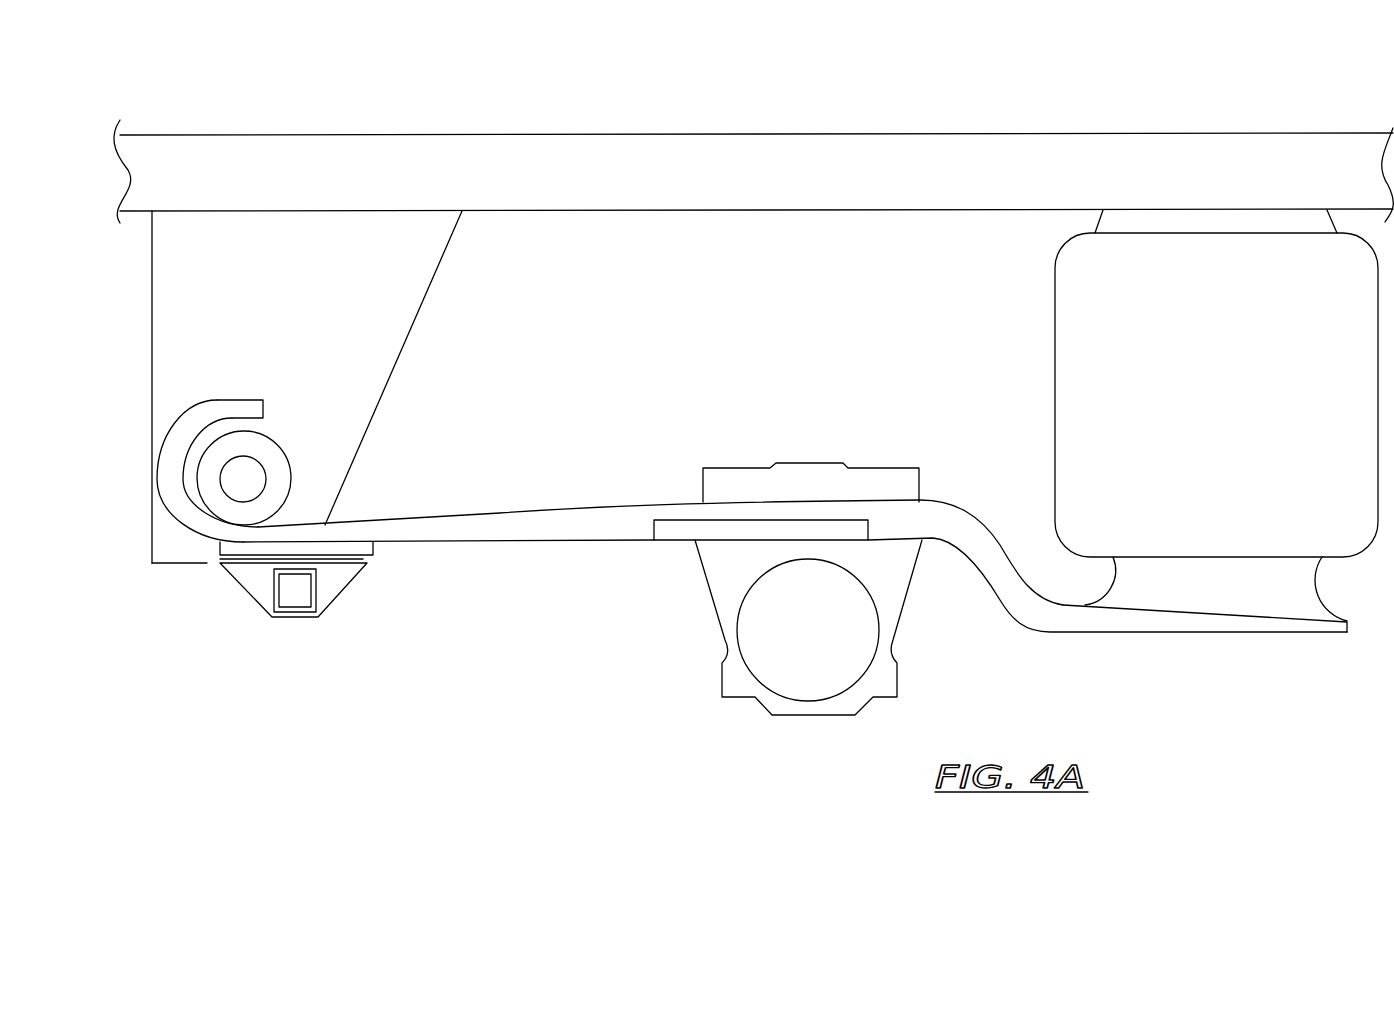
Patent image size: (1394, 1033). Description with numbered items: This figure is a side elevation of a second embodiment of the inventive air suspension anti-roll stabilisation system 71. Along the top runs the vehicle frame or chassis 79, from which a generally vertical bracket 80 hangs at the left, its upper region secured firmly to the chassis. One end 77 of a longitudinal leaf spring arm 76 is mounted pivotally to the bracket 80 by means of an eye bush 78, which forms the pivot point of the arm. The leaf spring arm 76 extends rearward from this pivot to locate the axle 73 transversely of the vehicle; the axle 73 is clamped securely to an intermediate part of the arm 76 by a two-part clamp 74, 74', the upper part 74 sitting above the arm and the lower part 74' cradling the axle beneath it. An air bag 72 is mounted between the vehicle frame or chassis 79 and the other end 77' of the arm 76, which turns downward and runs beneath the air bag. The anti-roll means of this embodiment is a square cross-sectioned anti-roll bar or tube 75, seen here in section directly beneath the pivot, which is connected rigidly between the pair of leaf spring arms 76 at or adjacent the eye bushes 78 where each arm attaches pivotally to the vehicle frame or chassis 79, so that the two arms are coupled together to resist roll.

The air suspension system 71 is at (553, 488).
The air bag 72 is at (1235, 408).
The axle 73 is at (817, 640).
The two-part clamp 74 is at (811, 438).
The two-part clamp 74' is at (788, 648).
The anti-roll bar or tube 75 is at (288, 596).
The leaf spring arm 76 is at (546, 535).
The one end of arm 77 is at (207, 521).
The other end of arm 77' is at (1205, 652).
The eye bush 78 is at (240, 477).
The vehicle frame or chassis 79 is at (773, 168).
The vertical bracket 80 is at (288, 323).